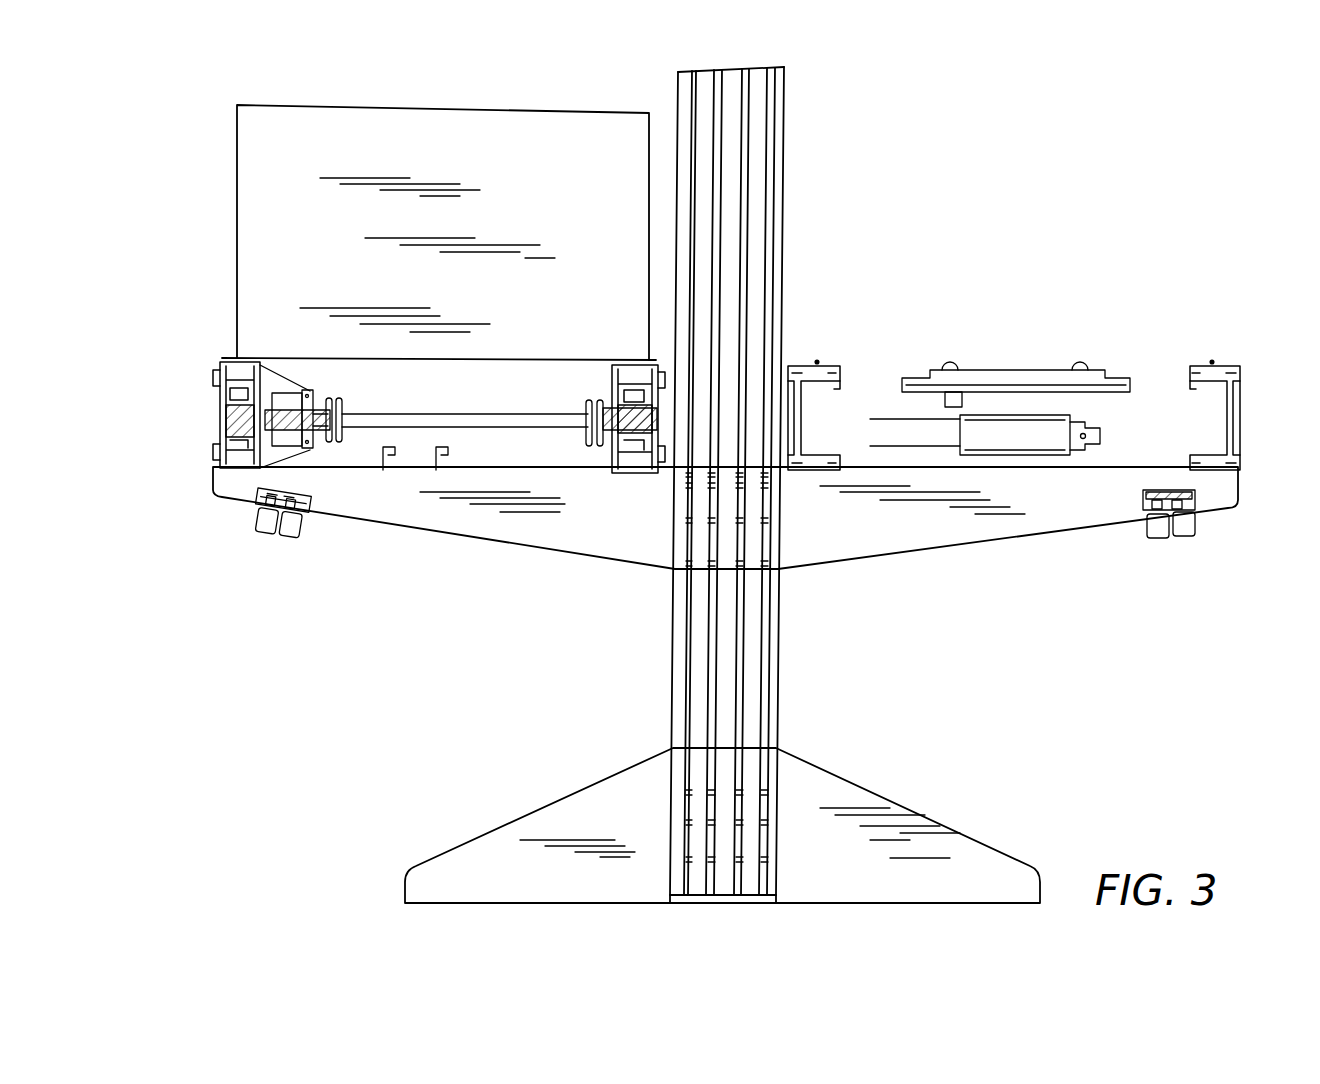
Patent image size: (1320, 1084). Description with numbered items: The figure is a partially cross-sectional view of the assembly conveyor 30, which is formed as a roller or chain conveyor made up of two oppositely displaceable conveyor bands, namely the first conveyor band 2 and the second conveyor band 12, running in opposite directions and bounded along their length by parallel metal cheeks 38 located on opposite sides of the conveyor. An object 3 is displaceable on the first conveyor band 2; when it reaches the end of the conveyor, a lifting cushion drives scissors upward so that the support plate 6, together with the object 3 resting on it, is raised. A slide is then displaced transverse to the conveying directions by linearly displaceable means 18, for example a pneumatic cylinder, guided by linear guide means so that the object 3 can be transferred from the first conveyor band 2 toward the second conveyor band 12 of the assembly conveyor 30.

The first conveyor band 2 is at (1015, 578).
The object 3 is at (236, 305).
The support plate 6 is at (1118, 383).
The second conveyor band 12 is at (460, 577).
The linearly displaceable means 18 is at (1100, 436).
The assembly conveyor 30 is at (1065, 346).
The metal cheeks 38 is at (221, 432).